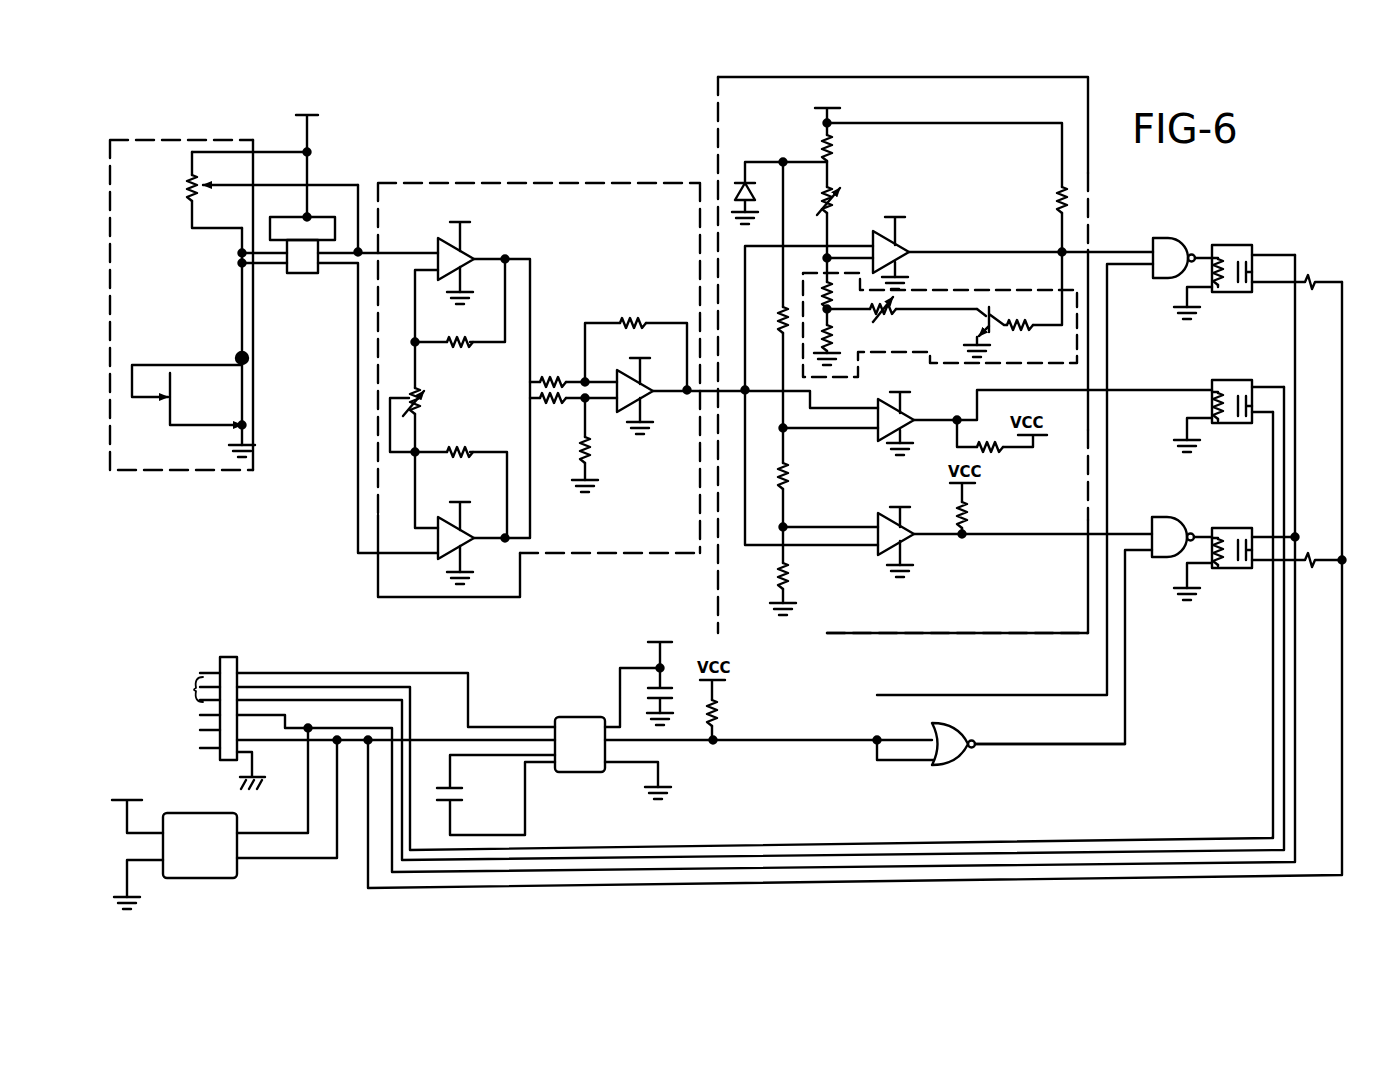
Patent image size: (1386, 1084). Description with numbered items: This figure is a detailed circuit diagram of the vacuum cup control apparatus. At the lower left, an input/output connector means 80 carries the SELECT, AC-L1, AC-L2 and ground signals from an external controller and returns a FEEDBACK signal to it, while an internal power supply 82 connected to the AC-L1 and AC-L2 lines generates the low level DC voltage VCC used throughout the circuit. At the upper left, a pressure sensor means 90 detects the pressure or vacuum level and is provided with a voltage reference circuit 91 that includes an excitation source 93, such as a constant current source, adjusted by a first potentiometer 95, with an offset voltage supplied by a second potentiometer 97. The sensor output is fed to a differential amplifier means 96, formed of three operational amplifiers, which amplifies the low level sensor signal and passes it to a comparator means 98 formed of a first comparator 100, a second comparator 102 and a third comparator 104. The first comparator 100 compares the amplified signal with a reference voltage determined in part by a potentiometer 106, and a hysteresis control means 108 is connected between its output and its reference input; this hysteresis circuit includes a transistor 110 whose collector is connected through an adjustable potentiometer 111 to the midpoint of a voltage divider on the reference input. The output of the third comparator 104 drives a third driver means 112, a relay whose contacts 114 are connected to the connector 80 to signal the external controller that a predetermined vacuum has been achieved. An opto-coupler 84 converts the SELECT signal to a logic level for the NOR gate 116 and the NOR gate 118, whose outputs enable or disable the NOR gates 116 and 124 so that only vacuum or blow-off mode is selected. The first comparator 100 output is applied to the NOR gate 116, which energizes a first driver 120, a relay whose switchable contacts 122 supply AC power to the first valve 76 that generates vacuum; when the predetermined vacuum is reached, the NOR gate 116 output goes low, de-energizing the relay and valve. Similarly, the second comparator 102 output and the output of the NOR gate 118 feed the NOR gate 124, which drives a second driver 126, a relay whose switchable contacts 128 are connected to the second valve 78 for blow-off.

The voltage reference circuit 91 is at (158, 108).
The second potentiometer 97 is at (195, 186).
The pressure sensor means 90 is at (300, 268).
The first potentiometer 95 is at (175, 400).
The excitation source 93 is at (250, 358).
The differential amplifier means 96 is at (557, 160).
The comparator means 98 is at (735, 139).
The potentiometer 106 is at (838, 190).
The first comparator 100 is at (906, 242).
The hysteresis control means 108 is at (1016, 312).
The adjustable potentiometer 111 is at (883, 320).
The transistor 110 is at (995, 335).
The third comparator 104 is at (883, 436).
The second comparator 102 is at (888, 547).
The first NOR gate 116 is at (1157, 240).
The first driver 120 is at (1229, 247).
The switchable contacts 122 is at (1232, 294).
The first valve 76 is at (1316, 268).
The third driver means 112 is at (1216, 406).
The contacts 114 is at (1239, 421).
The NOR gate 124 is at (1169, 518).
The switchable contacts 128 is at (1223, 553).
The second driver 126 is at (1232, 572).
The second valve 78 is at (1313, 550).
The input/output connector means 80 is at (238, 656).
The internal power supply 82 is at (216, 878).
The opto-coupler 84 is at (573, 768).
The NOR gate 118 is at (947, 755).